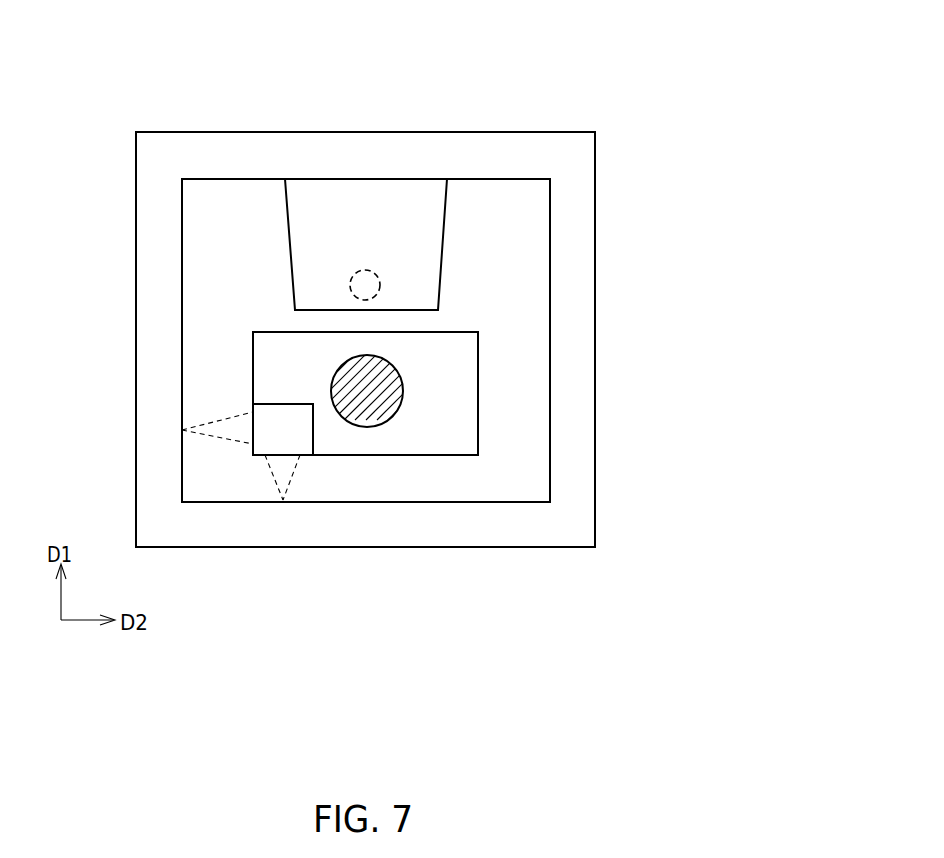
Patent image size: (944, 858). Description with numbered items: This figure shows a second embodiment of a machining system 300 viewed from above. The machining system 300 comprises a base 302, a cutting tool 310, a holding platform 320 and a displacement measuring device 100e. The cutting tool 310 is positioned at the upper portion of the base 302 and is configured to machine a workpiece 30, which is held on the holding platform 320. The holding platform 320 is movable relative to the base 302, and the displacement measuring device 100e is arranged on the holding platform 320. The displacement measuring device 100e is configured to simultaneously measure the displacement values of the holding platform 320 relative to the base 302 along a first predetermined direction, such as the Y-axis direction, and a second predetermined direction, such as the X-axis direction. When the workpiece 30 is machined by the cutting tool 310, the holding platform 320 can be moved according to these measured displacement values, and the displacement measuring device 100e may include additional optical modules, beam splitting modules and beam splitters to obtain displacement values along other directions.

The machining system 300 is at (528, 58).
The base 302 is at (580, 317).
The cutting tool 310 is at (373, 272).
The holding platform 320 is at (470, 425).
The workpiece 30 is at (377, 427).
The displacement measuring device 100e is at (278, 412).